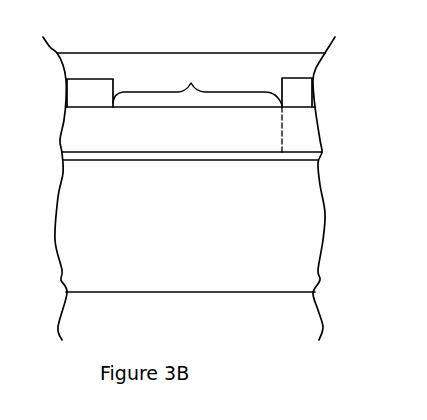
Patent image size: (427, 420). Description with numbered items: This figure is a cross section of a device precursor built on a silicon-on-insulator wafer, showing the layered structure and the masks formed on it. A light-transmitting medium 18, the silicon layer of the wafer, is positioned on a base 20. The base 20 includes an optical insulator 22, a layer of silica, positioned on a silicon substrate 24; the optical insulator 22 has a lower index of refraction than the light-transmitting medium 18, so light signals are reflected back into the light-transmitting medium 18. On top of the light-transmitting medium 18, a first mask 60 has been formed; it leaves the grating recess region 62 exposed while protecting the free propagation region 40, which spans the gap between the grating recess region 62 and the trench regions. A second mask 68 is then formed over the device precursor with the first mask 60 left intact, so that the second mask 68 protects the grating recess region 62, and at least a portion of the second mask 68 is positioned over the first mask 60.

The second mask 68 is at (152, 65).
The first mask 60 is at (85, 95).
The grating recess region 62 is at (197, 84).
The light-transmitting medium 18 is at (305, 118).
The free propagation region 40 is at (310, 133).
The optical insulator 22 is at (99, 153).
The substrate 24 is at (100, 280).
The base 20 is at (338, 152).